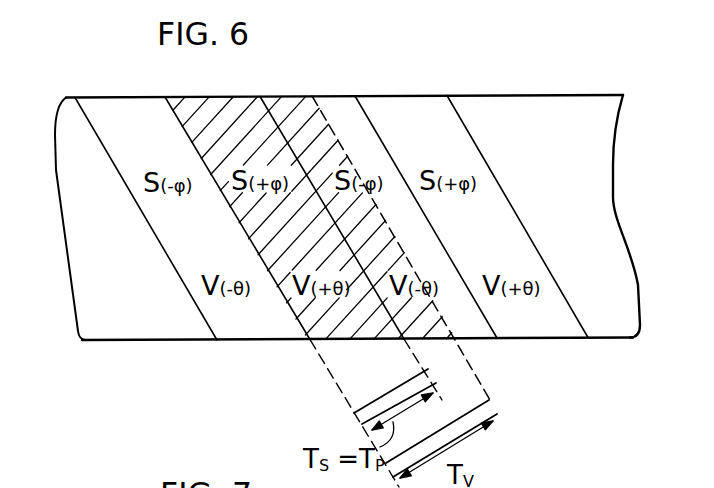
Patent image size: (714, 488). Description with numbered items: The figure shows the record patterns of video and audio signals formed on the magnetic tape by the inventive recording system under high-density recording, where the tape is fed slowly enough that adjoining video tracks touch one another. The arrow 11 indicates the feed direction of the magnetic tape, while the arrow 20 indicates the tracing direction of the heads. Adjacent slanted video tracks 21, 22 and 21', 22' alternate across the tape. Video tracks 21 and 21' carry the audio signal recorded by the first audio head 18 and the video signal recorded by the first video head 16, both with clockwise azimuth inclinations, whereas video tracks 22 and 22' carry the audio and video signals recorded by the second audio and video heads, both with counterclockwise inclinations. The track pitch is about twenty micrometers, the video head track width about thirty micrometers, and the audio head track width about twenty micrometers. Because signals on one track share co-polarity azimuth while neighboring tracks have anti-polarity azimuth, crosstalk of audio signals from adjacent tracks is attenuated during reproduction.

The arrow 11 is at (273, 81).
The first video head 16 is at (492, 400).
The first audio head 18 is at (437, 372).
The arrow 20 is at (132, 245).
The video track 21 is at (312, 291).
The video track 22 is at (192, 242).
The video track 21' is at (528, 241).
The video track 22' is at (423, 248).